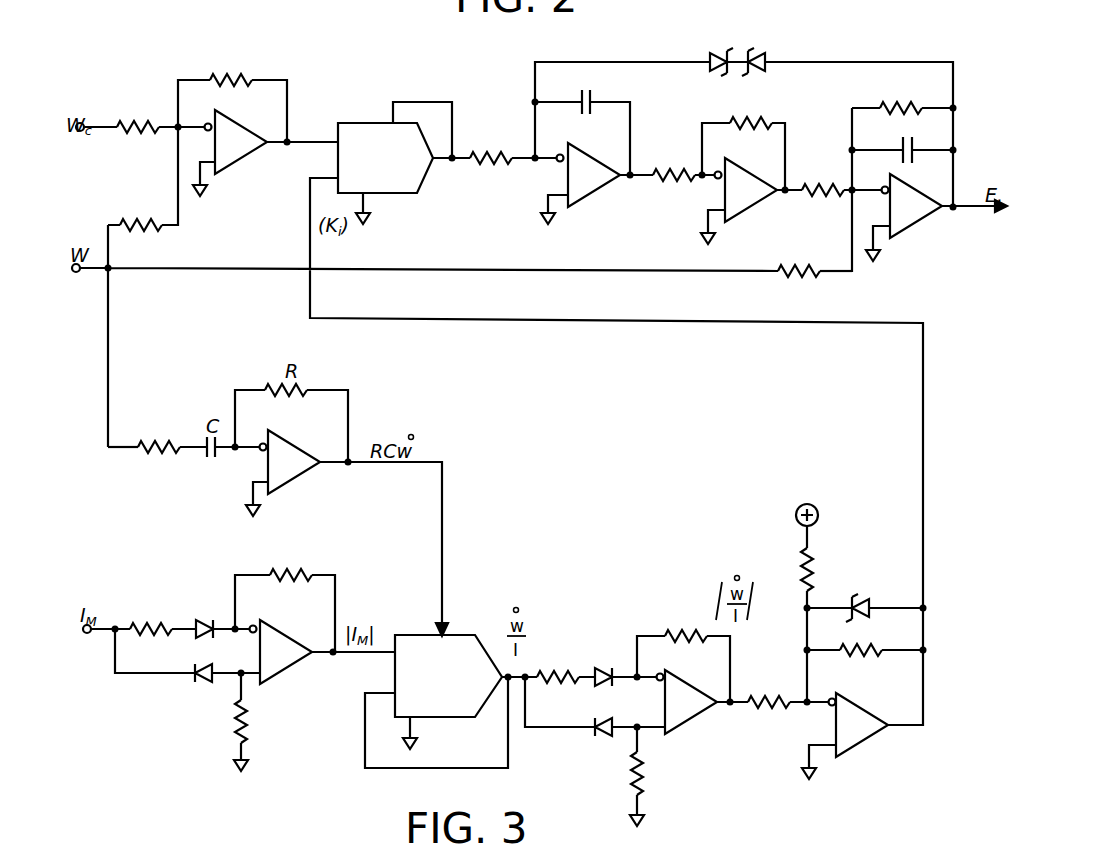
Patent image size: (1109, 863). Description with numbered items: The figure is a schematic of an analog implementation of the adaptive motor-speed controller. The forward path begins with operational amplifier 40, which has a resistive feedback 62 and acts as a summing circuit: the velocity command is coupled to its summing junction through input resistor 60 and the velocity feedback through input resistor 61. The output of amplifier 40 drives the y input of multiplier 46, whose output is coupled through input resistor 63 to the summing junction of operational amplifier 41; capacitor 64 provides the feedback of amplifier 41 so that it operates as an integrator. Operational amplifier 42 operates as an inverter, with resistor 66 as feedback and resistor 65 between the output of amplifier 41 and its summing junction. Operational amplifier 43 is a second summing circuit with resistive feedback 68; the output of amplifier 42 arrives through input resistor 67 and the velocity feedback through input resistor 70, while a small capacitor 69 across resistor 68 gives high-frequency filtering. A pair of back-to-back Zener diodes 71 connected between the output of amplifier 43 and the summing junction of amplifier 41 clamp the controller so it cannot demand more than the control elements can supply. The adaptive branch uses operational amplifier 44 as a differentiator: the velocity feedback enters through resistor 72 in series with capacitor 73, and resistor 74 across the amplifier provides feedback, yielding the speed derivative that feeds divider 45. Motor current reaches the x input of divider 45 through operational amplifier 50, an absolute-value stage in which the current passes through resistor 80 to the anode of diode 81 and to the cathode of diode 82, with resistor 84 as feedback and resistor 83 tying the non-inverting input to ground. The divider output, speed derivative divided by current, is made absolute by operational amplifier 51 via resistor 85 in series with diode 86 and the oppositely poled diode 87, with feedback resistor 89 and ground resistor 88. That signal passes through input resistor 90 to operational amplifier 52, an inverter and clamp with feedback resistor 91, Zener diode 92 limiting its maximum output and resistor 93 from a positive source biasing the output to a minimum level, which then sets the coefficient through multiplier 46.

The operational amplifier 40 is at (227, 170).
The operational amplifier 41 is at (592, 190).
The operational amplifier 42 is at (754, 206).
The operational amplifier 43 is at (916, 226).
The operational amplifier 44 is at (292, 486).
The divider 45 is at (468, 720).
The multiplier 46 is at (368, 108).
The operational amplifier 50 is at (300, 640).
The operational amplifier 51 is at (688, 722).
The operational amplifier 52 is at (860, 750).
The input resistor 60 is at (138, 112).
The input resistor 61 is at (158, 218).
The resistive feedback 62 is at (232, 93).
The input resistor 63 is at (506, 150).
The capacitor 64 is at (586, 95).
The resistor 65 is at (682, 166).
The resistor 66 is at (736, 118).
The input resistor 67 is at (834, 180).
The resistive feedback 68 is at (913, 102).
The capacitor 69 is at (906, 165).
The input resistor 70 is at (806, 284).
The Zener diodes 71 is at (745, 37).
The resistor 72 is at (177, 438).
The capacitor 73 is at (214, 462).
The resistor 74 is at (300, 388).
The resistor 80 is at (151, 614).
The diode 81 is at (212, 607).
The diode 82 is at (205, 684).
The resistor 83 is at (250, 716).
The resistor 84 is at (302, 572).
The resistor 85 is at (568, 655).
The diode 86 is at (612, 655).
The diode 87 is at (607, 735).
The resistor 88 is at (645, 770).
The resistor 89 is at (688, 630).
The input resistor 90 is at (772, 696).
The resistor 91 is at (856, 660).
The Zener diode 92 is at (866, 597).
The resistor 93 is at (800, 556).